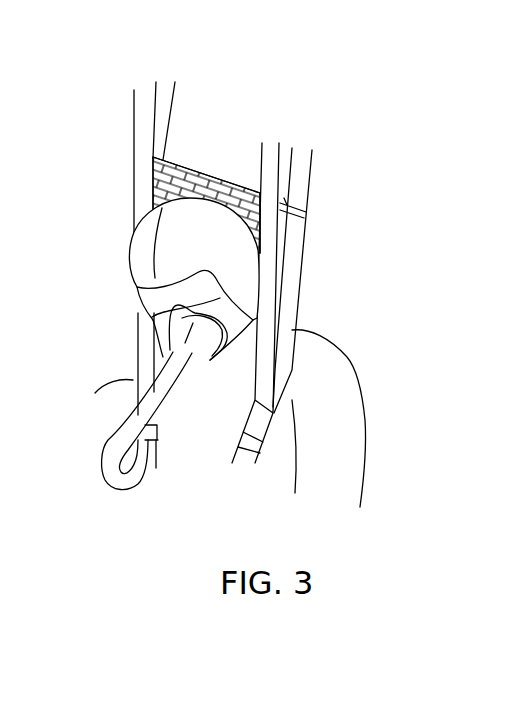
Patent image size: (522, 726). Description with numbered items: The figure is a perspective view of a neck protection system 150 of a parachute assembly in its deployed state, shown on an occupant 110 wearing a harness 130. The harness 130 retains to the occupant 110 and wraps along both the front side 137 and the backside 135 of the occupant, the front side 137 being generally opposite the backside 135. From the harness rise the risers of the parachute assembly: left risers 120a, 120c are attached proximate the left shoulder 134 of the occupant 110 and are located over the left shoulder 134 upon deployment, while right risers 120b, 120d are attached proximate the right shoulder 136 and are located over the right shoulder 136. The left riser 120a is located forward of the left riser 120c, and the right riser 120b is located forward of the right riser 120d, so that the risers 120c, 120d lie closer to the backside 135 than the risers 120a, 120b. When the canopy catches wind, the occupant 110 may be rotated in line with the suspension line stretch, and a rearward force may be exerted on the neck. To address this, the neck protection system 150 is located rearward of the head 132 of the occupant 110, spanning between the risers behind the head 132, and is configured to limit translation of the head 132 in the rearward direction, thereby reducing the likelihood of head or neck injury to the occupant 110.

The occupant 110 is at (153, 259).
The left riser 120a is at (265, 298).
The right riser 120b is at (142, 193).
The left riser 120c is at (310, 173).
The right riser 120d is at (168, 114).
The harness 130 is at (254, 425).
The head 132 is at (192, 247).
The left shoulder 134 is at (330, 369).
The backside 135 is at (358, 418).
The right shoulder 136 is at (130, 378).
The front side 137 is at (213, 405).
The neck protection system 150 is at (211, 162).